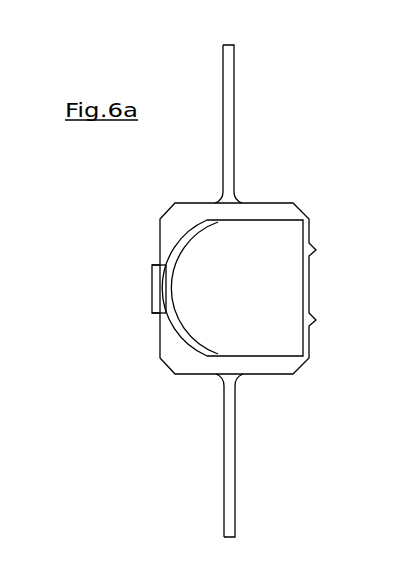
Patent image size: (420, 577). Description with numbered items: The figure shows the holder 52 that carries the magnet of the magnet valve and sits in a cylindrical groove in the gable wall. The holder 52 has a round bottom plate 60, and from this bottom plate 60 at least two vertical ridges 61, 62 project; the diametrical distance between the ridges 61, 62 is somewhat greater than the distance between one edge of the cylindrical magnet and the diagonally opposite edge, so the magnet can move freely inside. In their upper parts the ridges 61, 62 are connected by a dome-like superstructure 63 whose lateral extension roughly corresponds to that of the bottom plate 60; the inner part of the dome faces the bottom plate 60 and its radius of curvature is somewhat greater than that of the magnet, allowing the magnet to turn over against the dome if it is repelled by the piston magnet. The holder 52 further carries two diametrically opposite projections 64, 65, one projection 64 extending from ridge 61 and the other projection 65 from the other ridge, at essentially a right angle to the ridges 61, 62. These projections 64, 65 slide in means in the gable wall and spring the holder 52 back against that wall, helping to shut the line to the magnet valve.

The holder 52 is at (110, 237).
The bottom plate 60 is at (307, 275).
The vertical ridge 61 is at (190, 363).
The vertical ridge 62 is at (280, 212).
The dome-like superstructure 63 is at (189, 238).
The projection 64 is at (230, 502).
The projection 65 is at (228, 127).